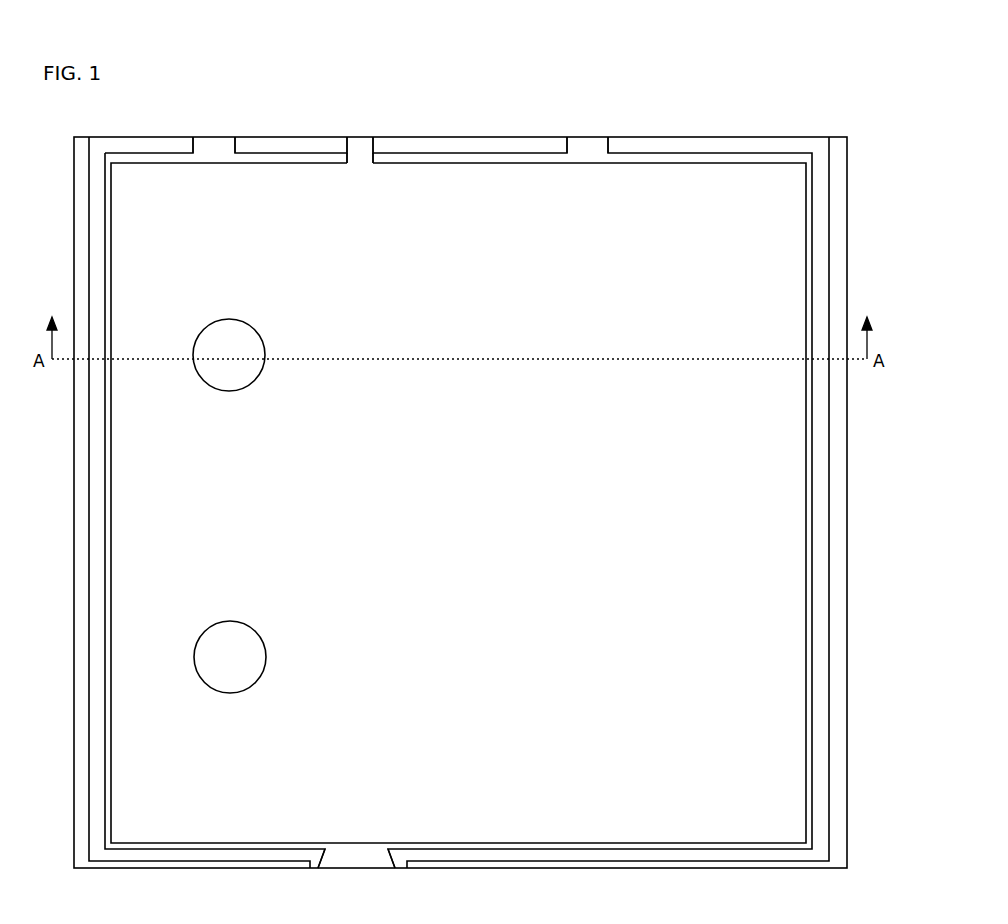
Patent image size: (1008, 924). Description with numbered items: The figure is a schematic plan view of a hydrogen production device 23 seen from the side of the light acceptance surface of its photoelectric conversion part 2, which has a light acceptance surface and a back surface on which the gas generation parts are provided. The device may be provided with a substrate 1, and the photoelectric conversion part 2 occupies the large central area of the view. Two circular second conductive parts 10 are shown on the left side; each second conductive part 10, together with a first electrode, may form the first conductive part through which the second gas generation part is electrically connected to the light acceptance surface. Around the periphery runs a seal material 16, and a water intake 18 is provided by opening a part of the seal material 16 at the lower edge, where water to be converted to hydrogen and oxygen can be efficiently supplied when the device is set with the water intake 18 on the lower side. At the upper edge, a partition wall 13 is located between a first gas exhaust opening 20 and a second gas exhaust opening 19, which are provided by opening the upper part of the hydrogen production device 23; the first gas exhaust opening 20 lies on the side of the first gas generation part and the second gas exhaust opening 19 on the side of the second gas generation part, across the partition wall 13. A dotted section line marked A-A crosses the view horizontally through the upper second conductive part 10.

The substrate 1 is at (82, 598).
The photoelectric conversion part 2 is at (437, 210).
The second conductive part 10 is at (225, 343).
The partition wall 13 is at (357, 144).
The seal material 16 is at (98, 552).
The water intake 18 is at (355, 858).
The second gas exhaust opening 19 is at (212, 145).
The first gas exhaust opening 20 is at (585, 148).
The hydrogen production device 23 is at (830, 116).